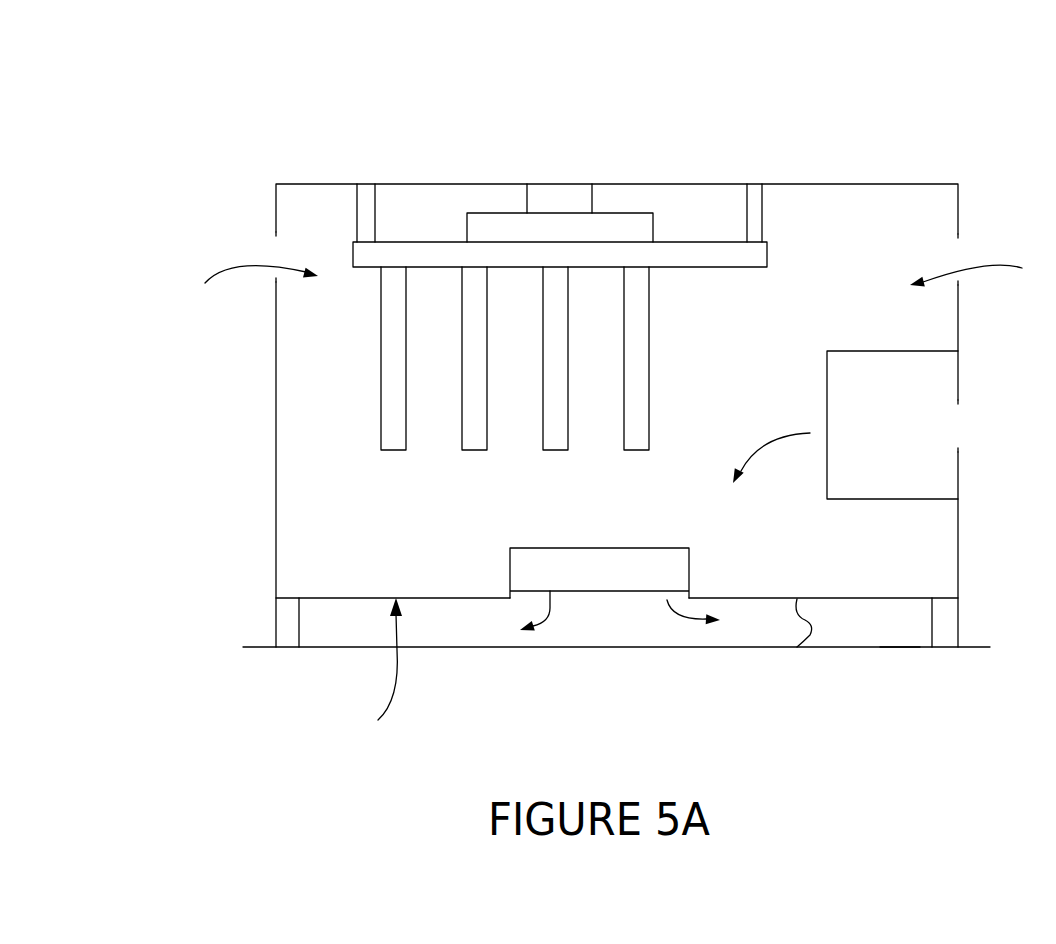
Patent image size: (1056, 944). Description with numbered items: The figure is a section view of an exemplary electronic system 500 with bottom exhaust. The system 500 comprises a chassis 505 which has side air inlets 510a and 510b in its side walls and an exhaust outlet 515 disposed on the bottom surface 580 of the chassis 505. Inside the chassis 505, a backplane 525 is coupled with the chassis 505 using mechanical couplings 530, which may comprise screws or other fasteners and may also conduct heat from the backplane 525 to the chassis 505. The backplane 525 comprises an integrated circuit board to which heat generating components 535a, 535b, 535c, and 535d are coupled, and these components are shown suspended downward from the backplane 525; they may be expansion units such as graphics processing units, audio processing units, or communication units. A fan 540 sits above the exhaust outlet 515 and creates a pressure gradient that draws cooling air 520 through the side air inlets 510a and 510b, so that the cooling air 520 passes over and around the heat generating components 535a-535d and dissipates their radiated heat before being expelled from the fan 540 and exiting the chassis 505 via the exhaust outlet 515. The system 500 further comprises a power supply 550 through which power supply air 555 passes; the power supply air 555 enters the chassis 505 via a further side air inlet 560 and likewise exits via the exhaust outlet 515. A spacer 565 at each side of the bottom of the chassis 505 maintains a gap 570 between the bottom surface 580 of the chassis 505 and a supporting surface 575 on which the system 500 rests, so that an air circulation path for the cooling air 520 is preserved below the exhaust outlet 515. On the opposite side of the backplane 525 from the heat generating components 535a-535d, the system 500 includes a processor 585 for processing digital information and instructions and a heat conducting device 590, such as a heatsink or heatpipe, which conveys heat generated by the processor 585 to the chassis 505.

The system 500 is at (113, 91).
The chassis 505 is at (877, 185).
The side air inlet 510a is at (268, 242).
The side air inlet 510b is at (958, 250).
The exhaust outlet 515 is at (575, 598).
The cooling air 520 is at (622, 447).
The backplane 525 is at (737, 253).
The mechanical coupling 530 is at (365, 192).
The heat generating component 535a is at (398, 333).
The heat generating component 535b is at (478, 333).
The heat generating component 535c is at (560, 333).
The heat generating component 535d is at (638, 333).
The fan 540 is at (518, 566).
The power supply 550 is at (867, 499).
The power supply air 555 is at (762, 472).
The side air inlet 560 is at (958, 425).
The spacer 565 is at (283, 622).
The gap 570 is at (815, 625).
The supporting surface 575 is at (893, 647).
The bottom surface 580 is at (372, 666).
The processor 585 is at (624, 225).
The heat conducting device 590 is at (551, 190).